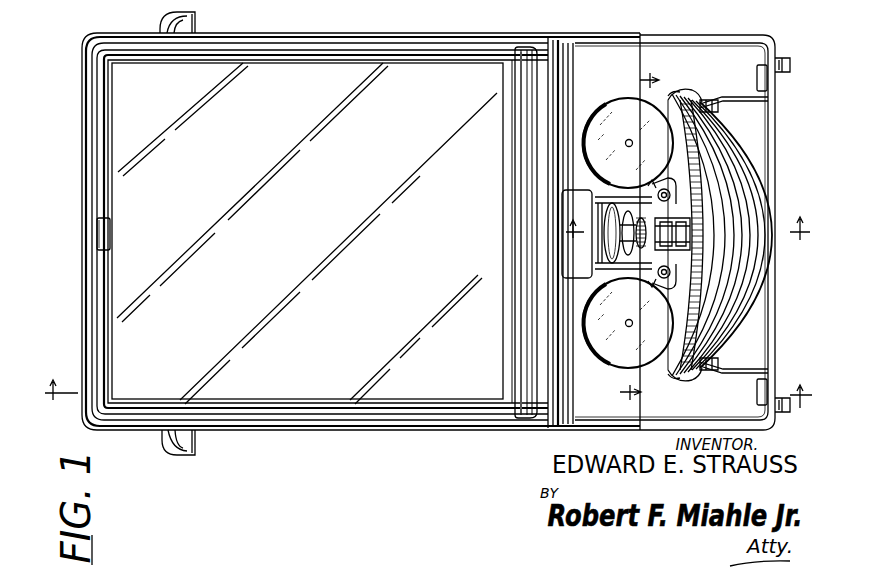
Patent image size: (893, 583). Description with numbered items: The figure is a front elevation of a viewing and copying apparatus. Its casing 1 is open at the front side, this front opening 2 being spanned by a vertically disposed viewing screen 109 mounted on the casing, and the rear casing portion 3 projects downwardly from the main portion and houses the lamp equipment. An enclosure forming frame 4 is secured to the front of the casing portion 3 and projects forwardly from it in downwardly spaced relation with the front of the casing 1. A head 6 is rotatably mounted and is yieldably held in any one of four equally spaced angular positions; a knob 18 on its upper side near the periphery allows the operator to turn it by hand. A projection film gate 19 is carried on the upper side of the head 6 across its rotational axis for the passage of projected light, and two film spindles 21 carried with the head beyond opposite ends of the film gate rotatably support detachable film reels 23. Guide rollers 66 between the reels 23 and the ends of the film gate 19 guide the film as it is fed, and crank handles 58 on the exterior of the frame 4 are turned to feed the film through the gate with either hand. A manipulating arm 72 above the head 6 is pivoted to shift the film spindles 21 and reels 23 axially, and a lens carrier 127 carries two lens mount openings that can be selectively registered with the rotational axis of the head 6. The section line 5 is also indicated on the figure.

The casing 1 is at (417, 233).
The front opening 2 is at (81, 250).
The rear casing portion 3 is at (424, 213).
The enclosure forming frame 4 is at (657, 234).
The section line 5-5 / drive housing 5 is at (686, 234).
The head 6 is at (666, 218).
The knob 18 is at (696, 243).
The projection film gate 19 is at (649, 222).
The film spindles 21 is at (618, 222).
The film reels 23 is at (628, 233).
The crank handles 58 is at (734, 229).
The guide rollers 66 is at (663, 233).
The manipulating arm 72 is at (720, 235).
The viewing screen 109 is at (307, 266).
The lens carrier 127 is at (623, 206).